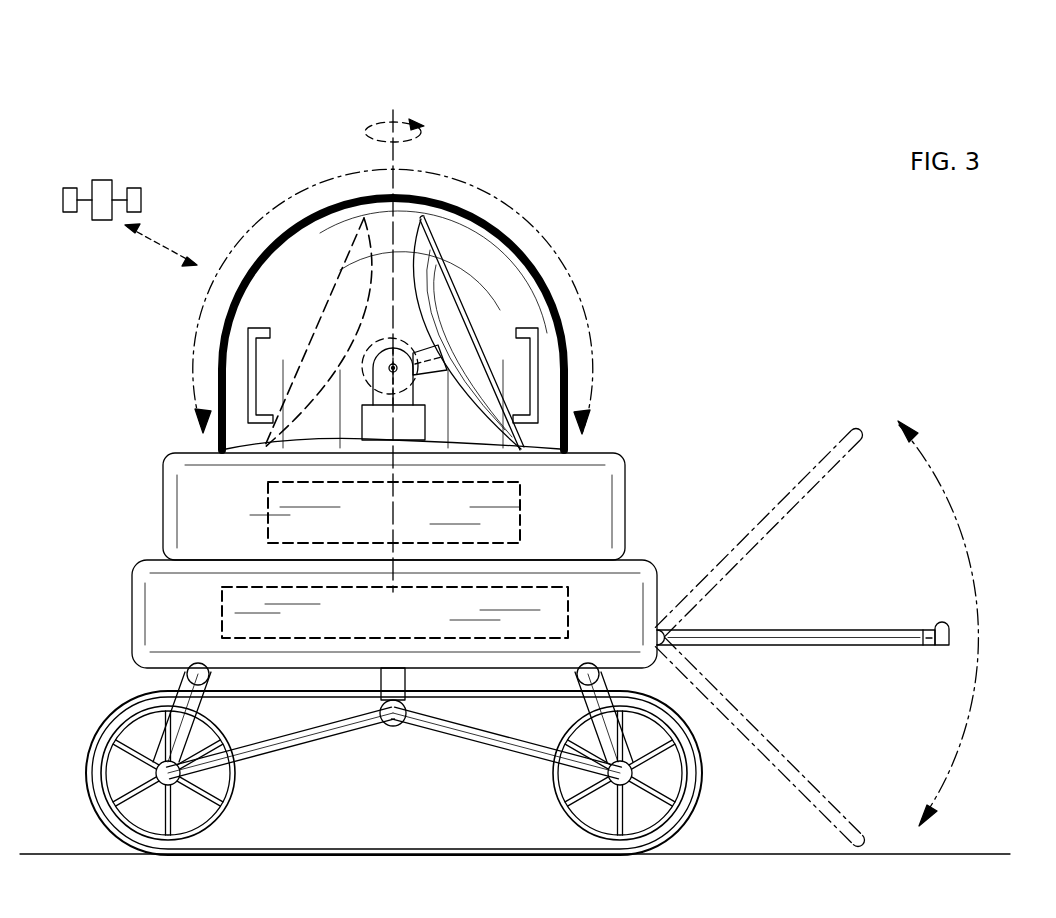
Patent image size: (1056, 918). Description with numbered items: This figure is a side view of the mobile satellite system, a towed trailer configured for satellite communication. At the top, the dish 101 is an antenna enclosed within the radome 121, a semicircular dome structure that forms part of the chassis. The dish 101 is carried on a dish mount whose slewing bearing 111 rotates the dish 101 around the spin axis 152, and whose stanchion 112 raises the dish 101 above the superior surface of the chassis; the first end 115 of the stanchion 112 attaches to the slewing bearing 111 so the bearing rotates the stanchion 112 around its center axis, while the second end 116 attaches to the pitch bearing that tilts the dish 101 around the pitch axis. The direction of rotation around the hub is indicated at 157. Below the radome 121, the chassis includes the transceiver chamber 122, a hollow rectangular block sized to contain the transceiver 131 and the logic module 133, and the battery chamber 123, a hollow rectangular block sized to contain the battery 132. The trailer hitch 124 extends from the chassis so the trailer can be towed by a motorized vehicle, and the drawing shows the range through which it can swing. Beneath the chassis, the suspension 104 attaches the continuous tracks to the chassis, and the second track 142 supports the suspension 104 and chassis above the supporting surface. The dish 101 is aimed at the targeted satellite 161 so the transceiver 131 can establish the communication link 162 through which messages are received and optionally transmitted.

The dish 101 is at (445, 292).
The suspension 104 is at (455, 727).
The slewing bearing 111 is at (413, 421).
The stanchion 112 is at (397, 366).
The first end 115 is at (410, 397).
The second end 116 is at (395, 366).
The radome 121 is at (307, 218).
The transceiver chamber 122 is at (600, 513).
The battery chamber 123 is at (657, 592).
The trailer hitch 124 is at (893, 630).
The transceiver 131 is at (268, 499).
The battery 132 is at (222, 602).
The logic module 133 is at (293, 523).
The second track 142 is at (428, 855).
The spin axis 152 is at (423, 128).
The hub rotation axis 157 is at (393, 367).
The targeted satellite 161 is at (102, 180).
The communication link 162 is at (160, 243).